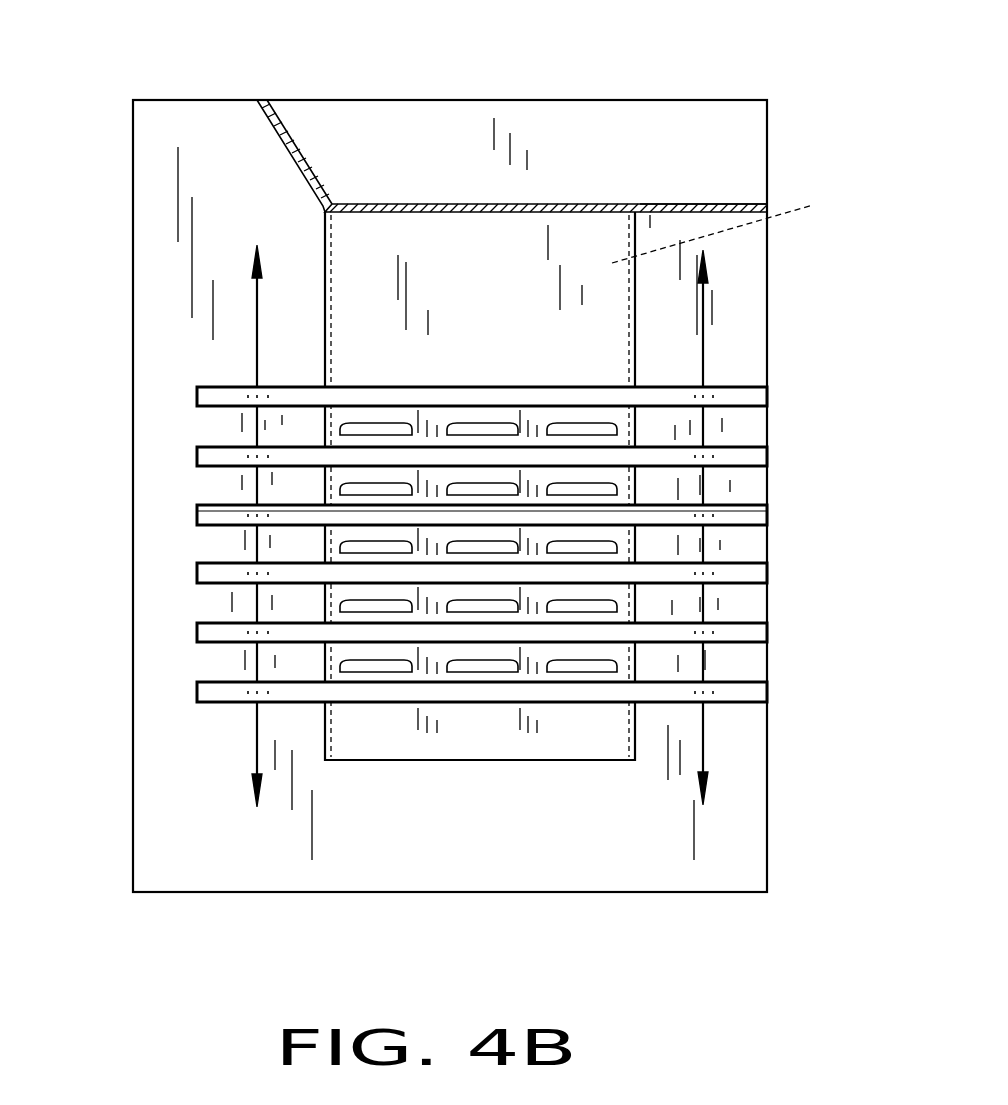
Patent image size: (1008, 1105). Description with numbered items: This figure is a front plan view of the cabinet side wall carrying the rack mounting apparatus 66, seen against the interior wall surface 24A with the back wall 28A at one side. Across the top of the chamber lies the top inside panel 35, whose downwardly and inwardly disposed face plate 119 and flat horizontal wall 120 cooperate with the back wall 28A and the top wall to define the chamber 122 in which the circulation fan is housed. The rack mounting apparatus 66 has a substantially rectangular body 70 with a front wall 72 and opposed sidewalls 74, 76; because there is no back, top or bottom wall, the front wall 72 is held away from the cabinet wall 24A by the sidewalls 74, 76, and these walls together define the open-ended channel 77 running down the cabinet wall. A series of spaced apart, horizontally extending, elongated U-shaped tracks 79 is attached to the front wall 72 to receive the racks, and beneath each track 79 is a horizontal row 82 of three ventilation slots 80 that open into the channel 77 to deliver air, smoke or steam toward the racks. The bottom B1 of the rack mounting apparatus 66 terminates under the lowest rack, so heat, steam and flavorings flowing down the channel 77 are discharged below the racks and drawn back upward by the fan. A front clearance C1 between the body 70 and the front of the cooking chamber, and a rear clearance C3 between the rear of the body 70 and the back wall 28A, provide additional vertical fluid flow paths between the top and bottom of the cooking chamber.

The face plate 119 is at (283, 152).
The flat horizontal wall 120 is at (382, 204).
The rack mounting apparatus 66 is at (467, 240).
The chamber 122 is at (541, 127).
The interior wall surface of side wall 24A is at (658, 228).
The top inside panel 35 is at (712, 203).
The open-ended channel 77 is at (729, 227).
The interior wall surface of back wall 28A is at (767, 265).
The front clearance C1 is at (255, 303).
The rear clearance C3 is at (703, 302).
The body 70 is at (325, 340).
The front wall 72 is at (568, 367).
The U-shaped tracks 79 is at (197, 396).
The ventilation slots 80 is at (618, 430).
The sidewall 76 is at (327, 488).
The sidewall 74 is at (633, 492).
The horizontal row of slots 82 is at (333, 548).
The bottom of rack mounting apparatus B1 is at (448, 760).